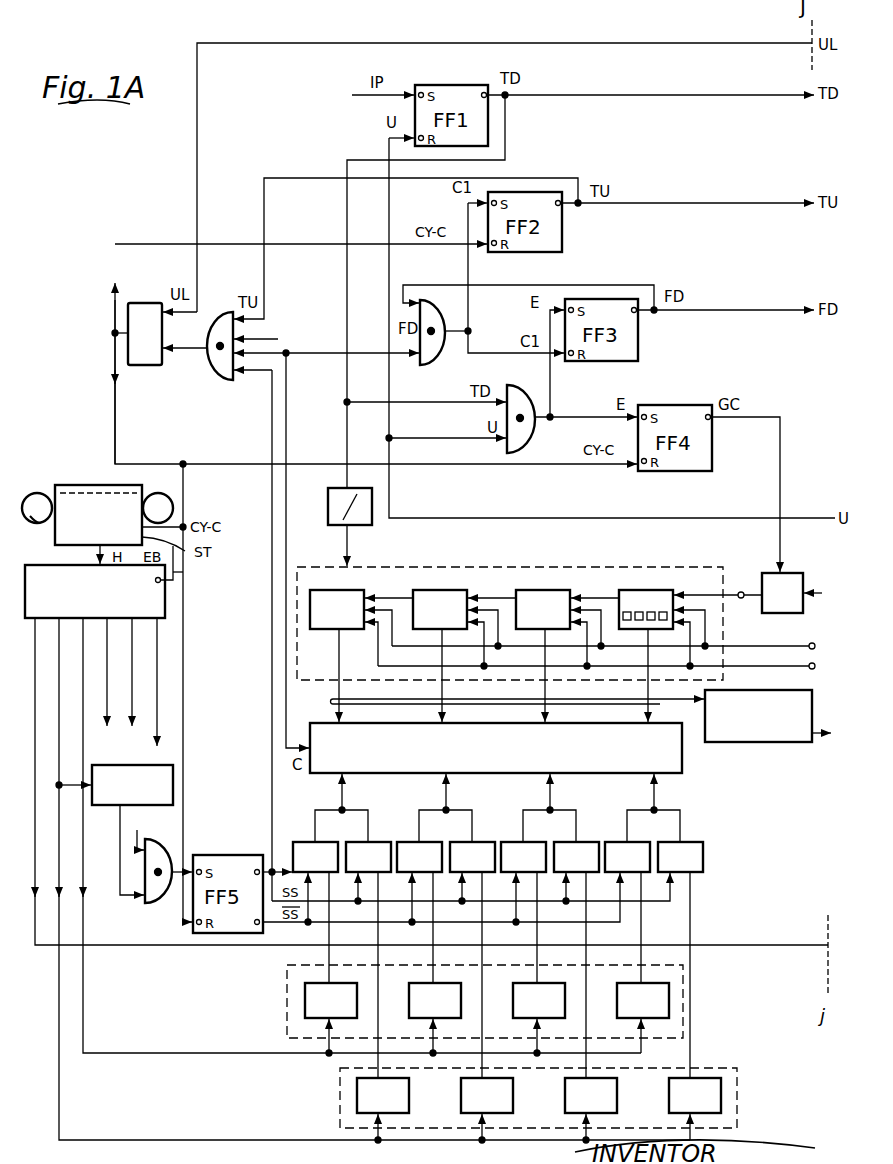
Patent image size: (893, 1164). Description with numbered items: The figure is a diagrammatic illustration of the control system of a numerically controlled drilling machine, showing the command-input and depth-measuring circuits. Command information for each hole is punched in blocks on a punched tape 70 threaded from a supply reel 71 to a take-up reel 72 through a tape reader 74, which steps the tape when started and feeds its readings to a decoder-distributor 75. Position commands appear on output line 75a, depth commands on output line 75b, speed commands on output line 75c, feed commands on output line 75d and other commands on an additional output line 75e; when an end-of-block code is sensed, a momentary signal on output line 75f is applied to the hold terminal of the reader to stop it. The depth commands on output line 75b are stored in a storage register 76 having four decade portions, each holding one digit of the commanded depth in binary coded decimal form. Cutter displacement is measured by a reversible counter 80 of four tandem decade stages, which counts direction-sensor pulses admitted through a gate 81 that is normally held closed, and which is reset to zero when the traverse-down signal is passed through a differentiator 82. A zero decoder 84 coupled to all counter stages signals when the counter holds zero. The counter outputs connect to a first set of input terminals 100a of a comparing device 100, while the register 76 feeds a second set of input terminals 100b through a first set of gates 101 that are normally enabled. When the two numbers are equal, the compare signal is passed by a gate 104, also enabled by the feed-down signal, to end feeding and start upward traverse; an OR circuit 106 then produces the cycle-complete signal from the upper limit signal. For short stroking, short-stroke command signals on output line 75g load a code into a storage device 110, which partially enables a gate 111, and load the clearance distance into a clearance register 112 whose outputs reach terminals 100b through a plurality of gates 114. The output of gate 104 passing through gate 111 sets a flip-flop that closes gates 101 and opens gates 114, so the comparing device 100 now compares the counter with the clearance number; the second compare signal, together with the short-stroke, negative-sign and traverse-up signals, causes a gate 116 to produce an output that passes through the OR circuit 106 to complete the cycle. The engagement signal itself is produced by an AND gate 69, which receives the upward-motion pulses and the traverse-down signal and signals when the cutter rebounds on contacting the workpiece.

The AND gate 69 is at (522, 438).
The punched tape 70 is at (37, 493).
The supply reel 71 is at (37, 524).
The take-up reel 72 is at (162, 481).
The tape reader 74 is at (78, 470).
The decoder-distributor 75 is at (165, 596).
The output line 75a is at (40, 946).
The output line 75b is at (86, 962).
The output line 75c is at (105, 730).
The output line 75d is at (134, 731).
The output line 75e is at (158, 724).
The output line 75f is at (183, 572).
The output line 75g is at (61, 997).
The storage register 76 is at (287, 1000).
The reversible counter 80 is at (301, 567).
The gate 81 is at (790, 573).
The differentiator 82 is at (330, 503).
The zero decoder 84 is at (785, 742).
The comparing device 100 is at (682, 760).
The input terminals 100a is at (344, 712).
The input terminals 100b is at (343, 797).
The gates 101 is at (306, 841).
The gate 104 is at (437, 358).
The OR circuit 106 is at (128, 360).
The storage device 110 is at (173, 781).
The gate 111 is at (165, 898).
The clearance register 112 is at (340, 1100).
The gates 114 is at (368, 841).
The gate 116 is at (214, 369).